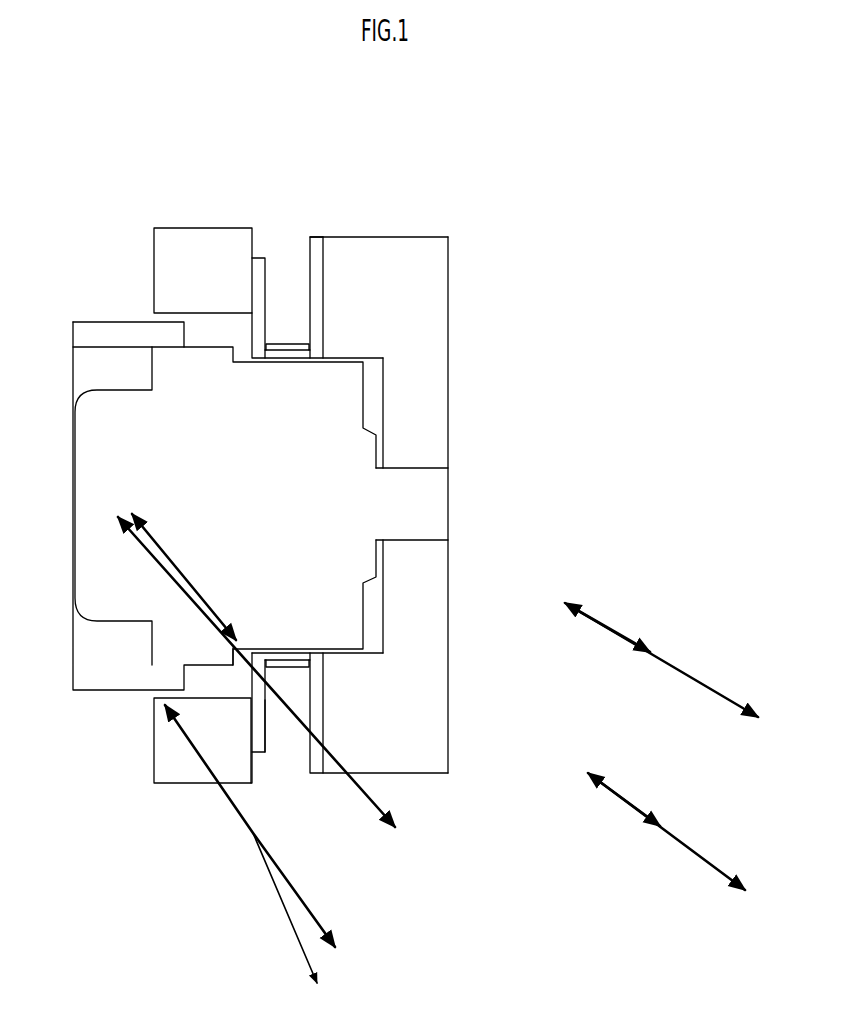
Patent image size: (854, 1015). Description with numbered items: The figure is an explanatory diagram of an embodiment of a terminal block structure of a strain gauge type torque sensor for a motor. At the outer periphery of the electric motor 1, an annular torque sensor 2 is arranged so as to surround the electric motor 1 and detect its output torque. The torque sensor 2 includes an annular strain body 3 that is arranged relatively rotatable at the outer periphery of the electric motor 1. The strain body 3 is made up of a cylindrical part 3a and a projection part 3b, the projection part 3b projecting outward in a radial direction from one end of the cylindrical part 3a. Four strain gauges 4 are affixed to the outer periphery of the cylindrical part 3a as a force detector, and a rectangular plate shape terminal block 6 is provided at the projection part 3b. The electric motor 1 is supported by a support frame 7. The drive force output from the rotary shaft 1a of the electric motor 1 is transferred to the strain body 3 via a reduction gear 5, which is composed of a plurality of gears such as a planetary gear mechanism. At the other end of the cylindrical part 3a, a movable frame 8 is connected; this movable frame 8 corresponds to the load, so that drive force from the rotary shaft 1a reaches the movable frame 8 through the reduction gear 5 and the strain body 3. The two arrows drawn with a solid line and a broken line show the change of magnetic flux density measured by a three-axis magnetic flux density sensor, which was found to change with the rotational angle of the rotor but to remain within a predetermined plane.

The electric motor 1 is at (122, 350).
The rotary shaft 1a is at (449, 502).
The torque sensor 2 is at (288, 262).
The strain body 3 is at (308, 232).
The cylindrical part 3a is at (272, 343).
The projection part 3b is at (312, 233).
The strain gauge 4 is at (290, 345).
The reduction gear 5 is at (448, 305).
The terminal block 6 is at (288, 722).
The support frame 7 is at (150, 322).
The movable frame 8 is at (238, 227).